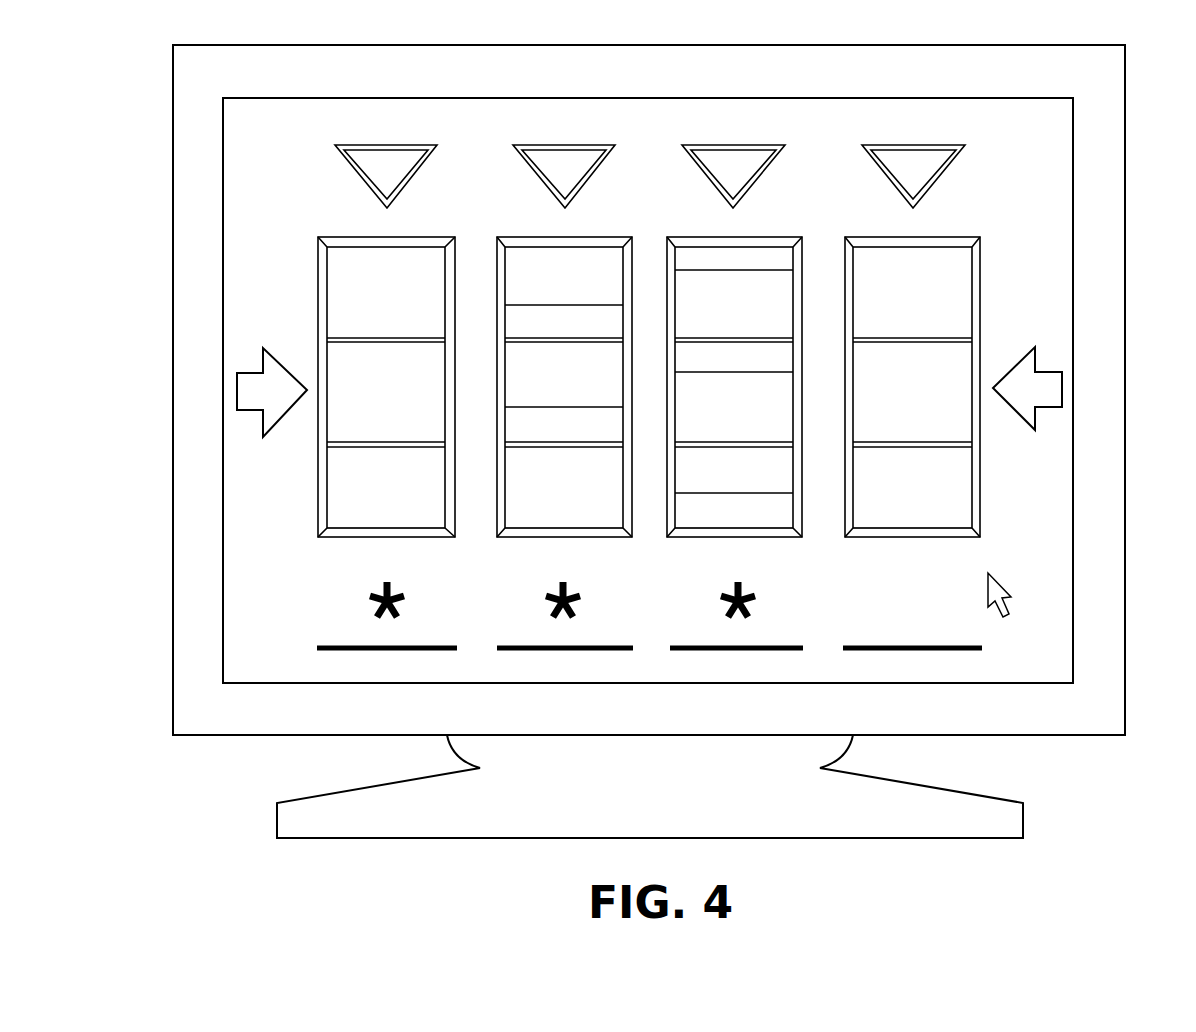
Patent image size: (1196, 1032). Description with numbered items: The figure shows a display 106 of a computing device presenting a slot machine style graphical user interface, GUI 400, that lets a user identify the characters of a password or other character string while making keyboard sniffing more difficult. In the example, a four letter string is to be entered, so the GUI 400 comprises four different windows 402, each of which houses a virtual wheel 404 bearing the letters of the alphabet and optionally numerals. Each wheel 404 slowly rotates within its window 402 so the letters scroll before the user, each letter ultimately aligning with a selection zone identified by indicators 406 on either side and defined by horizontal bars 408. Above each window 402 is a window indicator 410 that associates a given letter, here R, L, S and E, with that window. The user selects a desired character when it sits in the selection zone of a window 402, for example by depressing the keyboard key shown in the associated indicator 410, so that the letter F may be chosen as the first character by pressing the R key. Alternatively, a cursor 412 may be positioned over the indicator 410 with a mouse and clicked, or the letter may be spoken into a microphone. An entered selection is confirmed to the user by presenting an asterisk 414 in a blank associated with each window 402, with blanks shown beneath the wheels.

The display 106 is at (1115, 268).
The graphical user interface 400 is at (1019, 110).
The window 402 is at (420, 236).
The virtual wheel 404 is at (343, 520).
The indicator 406 is at (287, 402).
The horizontal bar 408 is at (337, 338).
The window indicator 410 is at (403, 145).
The cursor 412 is at (999, 584).
The asterisk 414 is at (377, 607).